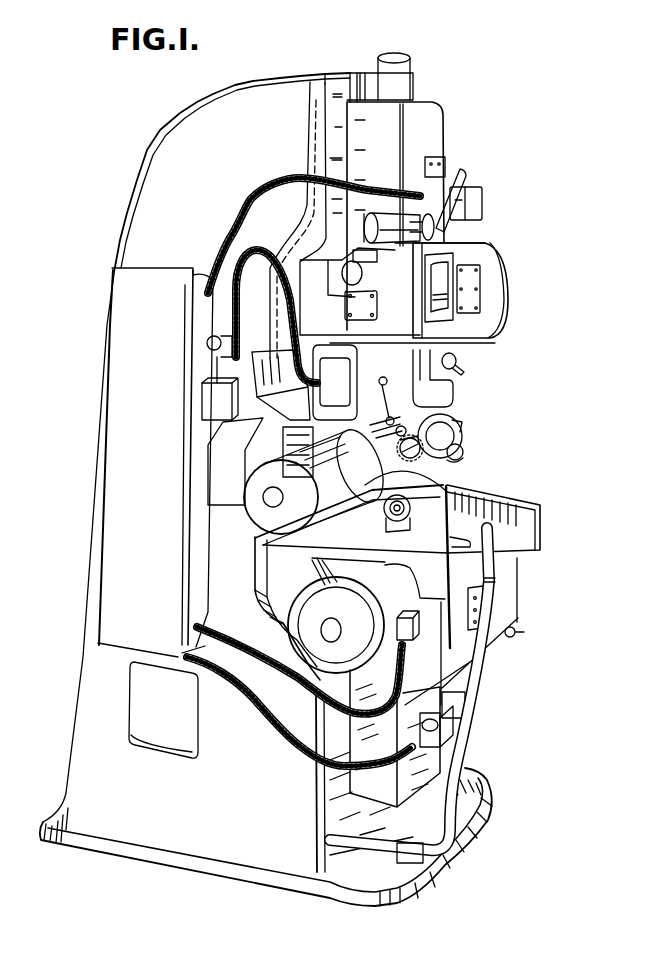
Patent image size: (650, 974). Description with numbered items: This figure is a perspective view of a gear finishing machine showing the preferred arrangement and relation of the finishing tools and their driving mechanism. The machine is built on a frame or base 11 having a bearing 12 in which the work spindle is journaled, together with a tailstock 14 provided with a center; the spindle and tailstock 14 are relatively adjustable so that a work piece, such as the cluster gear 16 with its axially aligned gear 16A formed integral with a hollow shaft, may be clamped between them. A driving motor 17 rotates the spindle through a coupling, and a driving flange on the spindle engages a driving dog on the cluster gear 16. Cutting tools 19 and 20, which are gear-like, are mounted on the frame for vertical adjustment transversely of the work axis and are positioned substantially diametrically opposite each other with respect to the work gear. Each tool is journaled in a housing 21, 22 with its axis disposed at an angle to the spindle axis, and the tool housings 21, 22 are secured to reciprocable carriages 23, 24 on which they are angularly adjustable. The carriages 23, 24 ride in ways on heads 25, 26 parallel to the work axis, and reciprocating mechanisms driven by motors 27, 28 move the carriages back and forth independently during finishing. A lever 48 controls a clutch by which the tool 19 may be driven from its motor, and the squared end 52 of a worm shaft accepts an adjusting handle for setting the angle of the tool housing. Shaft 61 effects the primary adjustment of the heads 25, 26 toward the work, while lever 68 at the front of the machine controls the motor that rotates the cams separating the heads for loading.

The frame or base 11 is at (77, 722).
The bearing 12 is at (423, 470).
The tailstock 14 is at (440, 423).
The cluster gear 16 is at (460, 448).
The gear of cluster gear 16A is at (447, 437).
The driving motor 17 is at (275, 518).
The cutting tool 19 is at (402, 427).
The cutting tool 20 is at (433, 480).
The tool housing 21 is at (419, 392).
The tool housing 22 is at (428, 515).
The reciprocable carriage 23 is at (495, 285).
The reciprocable carriage 24 is at (540, 530).
The head 25 is at (444, 140).
The head 26 is at (428, 760).
The motor 27 is at (500, 313).
The motor 28 is at (366, 615).
The lever 48 is at (388, 392).
The squared end of worm shaft 52 is at (462, 366).
The shaft 61 is at (437, 230).
The lever 68 is at (466, 710).